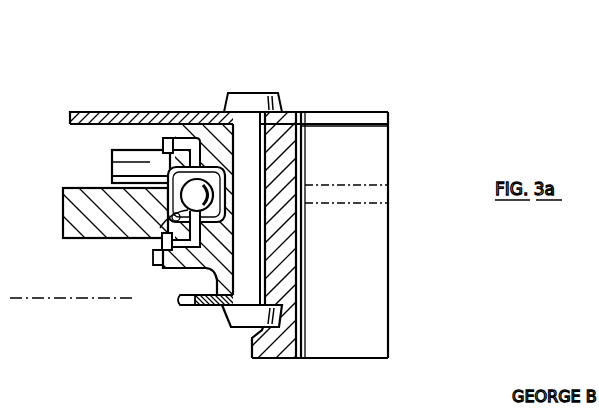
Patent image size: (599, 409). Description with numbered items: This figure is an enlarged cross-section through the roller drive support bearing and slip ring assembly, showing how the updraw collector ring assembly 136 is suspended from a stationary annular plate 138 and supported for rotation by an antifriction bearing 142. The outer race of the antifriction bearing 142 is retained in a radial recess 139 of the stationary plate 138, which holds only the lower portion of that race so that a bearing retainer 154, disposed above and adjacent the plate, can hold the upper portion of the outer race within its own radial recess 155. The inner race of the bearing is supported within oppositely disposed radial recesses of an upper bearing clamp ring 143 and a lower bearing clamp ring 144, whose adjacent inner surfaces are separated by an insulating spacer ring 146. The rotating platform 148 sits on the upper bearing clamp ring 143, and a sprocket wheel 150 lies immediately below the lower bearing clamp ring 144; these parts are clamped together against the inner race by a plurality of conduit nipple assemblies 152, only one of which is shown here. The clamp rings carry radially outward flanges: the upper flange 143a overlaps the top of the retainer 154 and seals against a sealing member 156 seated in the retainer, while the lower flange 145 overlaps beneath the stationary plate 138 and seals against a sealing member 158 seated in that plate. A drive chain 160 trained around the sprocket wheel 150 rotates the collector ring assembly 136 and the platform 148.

The updraw collector ring assembly 136 is at (253, 366).
The stationary annular plate 138 is at (63, 220).
The radial recess 139 is at (172, 222).
The antifriction bearing 142 is at (185, 200).
The upper bearing clamp ring 143 is at (286, 128).
The upper flange 143a is at (160, 126).
The lower bearing clamp ring 144 is at (278, 265).
The lower flange 145 is at (158, 262).
The insulating spacer ring 146 is at (284, 198).
The rotating platform 148 is at (88, 112).
The sprocket wheel 150 is at (207, 306).
The conduit nipple assembly 152 is at (248, 120).
The bearing retainer 154 is at (112, 176).
The radial recess 155 is at (112, 162).
The sealing member 156 is at (160, 147).
The sealing member 158 is at (166, 252).
The drive chain 160 is at (92, 302).